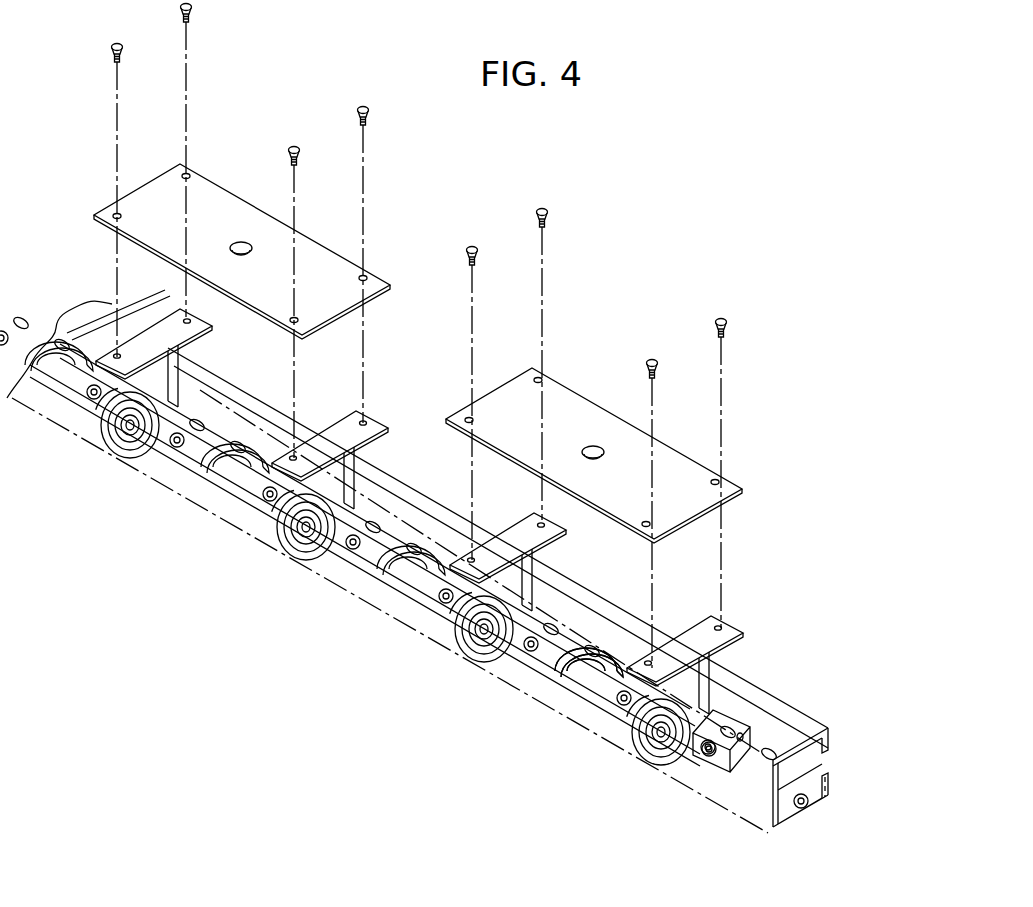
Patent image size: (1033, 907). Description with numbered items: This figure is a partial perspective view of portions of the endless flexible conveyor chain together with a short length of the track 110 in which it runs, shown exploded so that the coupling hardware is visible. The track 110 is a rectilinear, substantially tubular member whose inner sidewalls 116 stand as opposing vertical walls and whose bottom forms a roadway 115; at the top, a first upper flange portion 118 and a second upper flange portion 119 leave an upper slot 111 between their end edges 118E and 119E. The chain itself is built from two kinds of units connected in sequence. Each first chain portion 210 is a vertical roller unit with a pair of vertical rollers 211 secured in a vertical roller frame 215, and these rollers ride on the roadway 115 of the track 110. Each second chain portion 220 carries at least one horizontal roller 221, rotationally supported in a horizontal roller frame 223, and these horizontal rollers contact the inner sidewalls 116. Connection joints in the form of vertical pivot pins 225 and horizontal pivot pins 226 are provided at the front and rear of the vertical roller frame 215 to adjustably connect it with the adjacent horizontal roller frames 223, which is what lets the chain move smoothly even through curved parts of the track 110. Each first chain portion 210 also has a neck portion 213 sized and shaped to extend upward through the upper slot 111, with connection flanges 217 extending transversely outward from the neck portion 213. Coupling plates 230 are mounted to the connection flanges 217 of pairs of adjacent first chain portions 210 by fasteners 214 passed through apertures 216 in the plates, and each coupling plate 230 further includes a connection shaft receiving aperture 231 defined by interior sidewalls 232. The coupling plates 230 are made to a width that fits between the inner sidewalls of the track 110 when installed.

The track 110 is at (468, 612).
The upper slot 111 is at (785, 735).
The roadway 115 is at (814, 798).
The inner sidewalls 116 is at (820, 777).
The first upper flange portion 118 is at (772, 748).
The end edge of first upper flange portion 118E is at (788, 814).
The second upper flange portion 119 is at (807, 727).
The end edge of second upper flange portion 119E is at (834, 756).
The first chain portion 210 is at (404, 561).
The vertical roller 211 is at (641, 760).
The neck portion 213 is at (366, 452).
The fastener 214 is at (122, 57).
The vertical roller frame 215 is at (740, 755).
The aperture 216 is at (190, 173).
The connection flange 217 is at (384, 425).
The second chain portion 220 is at (512, 688).
The horizontal roller 221 is at (567, 680).
The horizontal roller frame 223 is at (560, 691).
The vertical pivot pin 225 is at (505, 670).
The horizontal pivot pin 226 is at (712, 751).
The coupling plate 230 is at (392, 330).
The connection shaft receiving aperture 231 is at (240, 246).
The interior sidewalls 232 is at (242, 256).